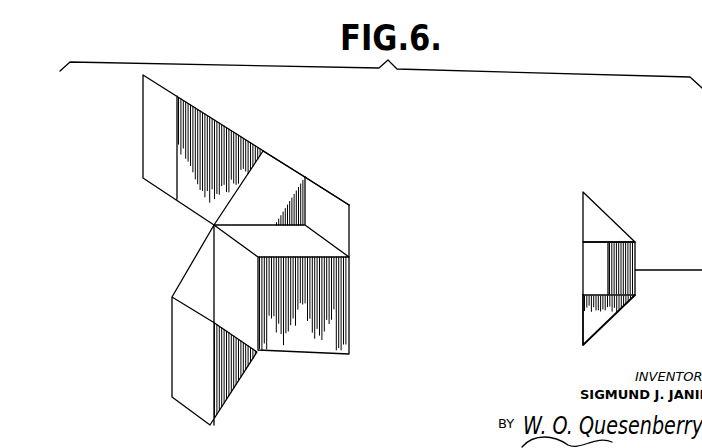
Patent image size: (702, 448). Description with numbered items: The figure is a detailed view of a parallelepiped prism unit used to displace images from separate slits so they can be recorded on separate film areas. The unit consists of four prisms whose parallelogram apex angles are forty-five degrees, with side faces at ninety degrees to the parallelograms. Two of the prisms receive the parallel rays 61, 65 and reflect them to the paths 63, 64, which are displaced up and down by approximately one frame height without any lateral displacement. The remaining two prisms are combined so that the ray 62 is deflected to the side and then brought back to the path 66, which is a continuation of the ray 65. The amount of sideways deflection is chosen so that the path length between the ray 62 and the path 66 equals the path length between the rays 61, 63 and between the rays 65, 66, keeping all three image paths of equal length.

The parallel ray 61 is at (293, 169).
The ray 62 is at (477, 157).
The displaced ray path 63 is at (160, 137).
The displaced ray path 64 is at (190, 360).
The parallel ray 65 is at (331, 193).
The ray path continuation 66 is at (237, 283).